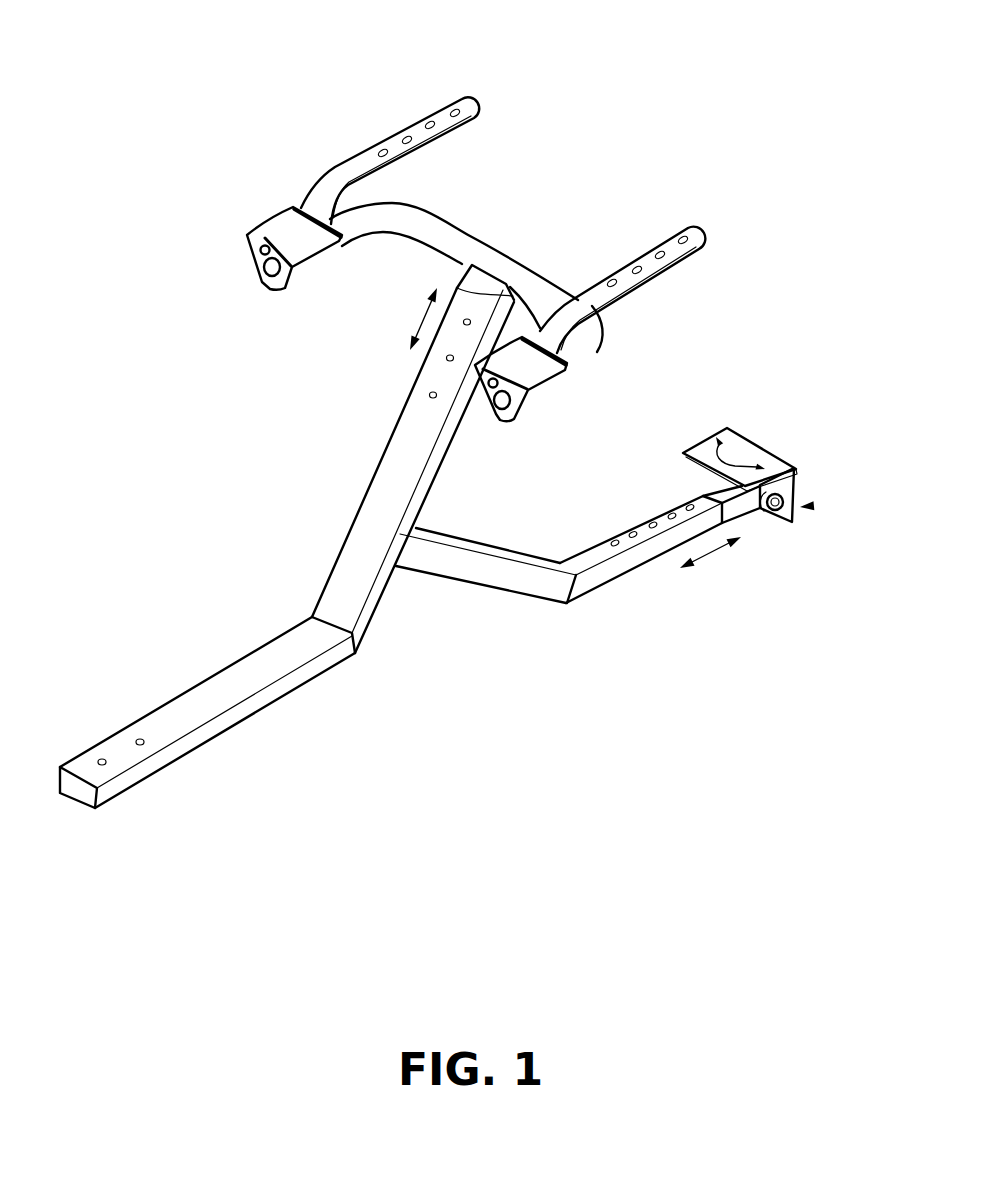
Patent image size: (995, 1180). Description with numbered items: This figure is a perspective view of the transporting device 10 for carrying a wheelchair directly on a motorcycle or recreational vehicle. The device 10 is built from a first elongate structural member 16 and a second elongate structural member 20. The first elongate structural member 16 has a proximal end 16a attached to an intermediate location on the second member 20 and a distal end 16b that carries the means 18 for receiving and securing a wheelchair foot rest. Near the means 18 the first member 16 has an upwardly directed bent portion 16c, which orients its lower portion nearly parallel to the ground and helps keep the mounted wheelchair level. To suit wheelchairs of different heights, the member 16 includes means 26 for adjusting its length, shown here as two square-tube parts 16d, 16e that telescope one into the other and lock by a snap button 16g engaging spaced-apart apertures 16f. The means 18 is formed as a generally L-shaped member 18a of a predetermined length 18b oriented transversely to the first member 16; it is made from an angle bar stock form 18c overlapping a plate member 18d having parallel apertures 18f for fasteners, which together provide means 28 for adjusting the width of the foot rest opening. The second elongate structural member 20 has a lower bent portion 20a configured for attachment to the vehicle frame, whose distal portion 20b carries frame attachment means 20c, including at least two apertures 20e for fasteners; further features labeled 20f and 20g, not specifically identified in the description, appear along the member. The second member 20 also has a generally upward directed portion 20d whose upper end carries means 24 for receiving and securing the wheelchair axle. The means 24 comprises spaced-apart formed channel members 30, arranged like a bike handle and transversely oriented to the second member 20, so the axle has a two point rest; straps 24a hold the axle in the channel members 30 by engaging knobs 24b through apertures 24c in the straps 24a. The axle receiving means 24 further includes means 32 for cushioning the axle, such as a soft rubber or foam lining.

The transporting device 10 is at (268, 58).
The first elongate structural member 16 is at (562, 632).
The proximal end 16a is at (420, 558).
The distal end 16b is at (762, 520).
The upwardly directed bent portion 16c is at (553, 563).
The telescoping part 16d is at (631, 531).
The telescoping part 16e is at (720, 490).
The spaced-apart apertures 16f is at (669, 512).
The snap button 16g is at (611, 540).
The means for receiving and securing a foot rest 18 is at (785, 415).
The L-shaped member 18a is at (752, 442).
The predetermined length 18b is at (710, 443).
The angle bar stock form 18c is at (802, 482).
The plate member 18d is at (772, 514).
The parallel apertures 18f is at (757, 510).
The second elongate structural member 20 is at (319, 533).
The bent portion 20a is at (190, 715).
The distal portion 20b is at (117, 787).
The frame attachment means 20c is at (133, 717).
The generally upward directed portion 20d is at (382, 513).
The apertures 20e is at (145, 742).
The adjustment hole 20f is at (447, 359).
The adjustment hole 20g is at (430, 396).
The means for receiving and securing an axle 24 is at (252, 198).
The straps 24a is at (378, 173).
The knobs 24b is at (255, 262).
The apertures 24c is at (434, 127).
The means for adjusting a length 26 is at (710, 553).
The means for adjusting a width 28 is at (822, 505).
The formed channel members 30 is at (296, 240).
The means for cushioning the axle 32 is at (296, 243).